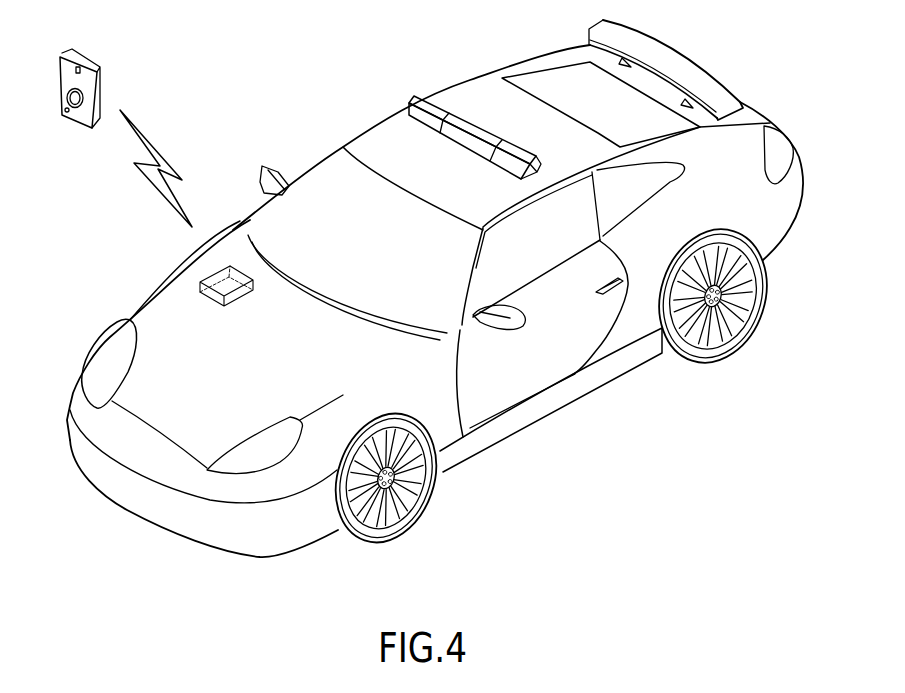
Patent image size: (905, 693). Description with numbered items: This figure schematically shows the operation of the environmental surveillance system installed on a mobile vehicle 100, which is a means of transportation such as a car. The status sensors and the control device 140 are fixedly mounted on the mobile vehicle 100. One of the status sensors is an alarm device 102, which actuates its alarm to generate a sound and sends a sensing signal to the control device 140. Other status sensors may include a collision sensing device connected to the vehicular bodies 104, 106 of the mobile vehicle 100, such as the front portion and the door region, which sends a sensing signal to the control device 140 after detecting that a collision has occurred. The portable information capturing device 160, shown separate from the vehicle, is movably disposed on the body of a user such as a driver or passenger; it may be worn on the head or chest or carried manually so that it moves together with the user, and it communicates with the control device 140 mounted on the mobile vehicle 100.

The mobile vehicle 100 is at (745, 61).
The alarm device 102 is at (424, 98).
The vehicular body 104 is at (143, 507).
The vehicular body 106 is at (545, 367).
The control device 140 is at (217, 277).
The portable information capturing device 160 is at (102, 78).